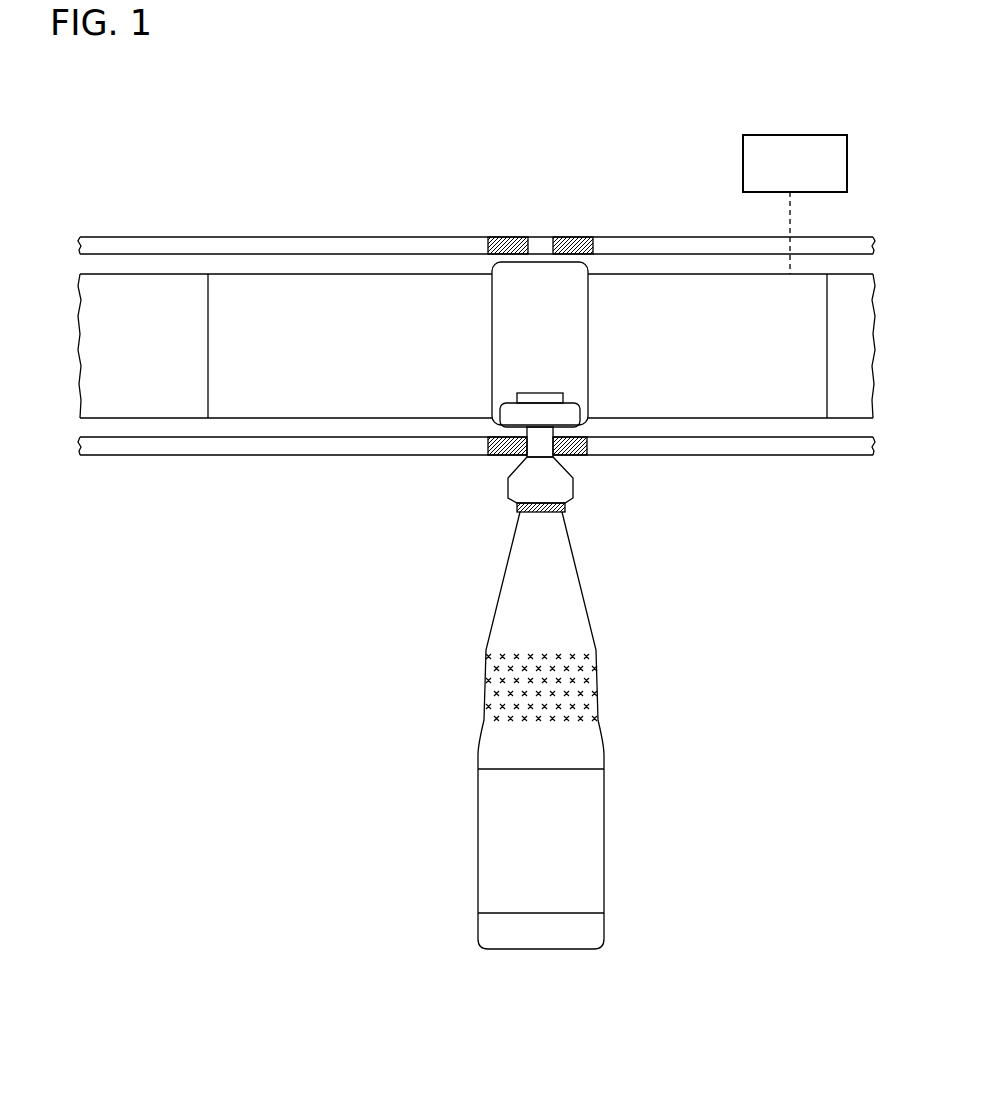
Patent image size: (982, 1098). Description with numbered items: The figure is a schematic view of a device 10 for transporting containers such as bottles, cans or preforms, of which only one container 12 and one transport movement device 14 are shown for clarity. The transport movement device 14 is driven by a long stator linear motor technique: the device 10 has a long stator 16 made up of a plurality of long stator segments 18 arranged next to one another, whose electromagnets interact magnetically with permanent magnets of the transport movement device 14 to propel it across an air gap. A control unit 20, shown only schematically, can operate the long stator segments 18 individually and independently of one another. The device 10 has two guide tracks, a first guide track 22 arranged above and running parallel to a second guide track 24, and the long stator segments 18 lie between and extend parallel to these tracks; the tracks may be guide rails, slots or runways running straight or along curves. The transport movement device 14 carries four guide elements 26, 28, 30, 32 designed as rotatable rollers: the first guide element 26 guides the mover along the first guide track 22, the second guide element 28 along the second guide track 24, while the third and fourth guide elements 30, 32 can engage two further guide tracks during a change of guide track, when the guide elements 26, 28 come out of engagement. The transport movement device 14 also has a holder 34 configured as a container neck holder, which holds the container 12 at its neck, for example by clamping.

The device for transporting containers 10 is at (481, 90).
The container 12 is at (605, 795).
The transport movement device 14 is at (590, 342).
The long stator 16 is at (262, 252).
The long stator segment 18 is at (162, 396).
The control unit 20 is at (778, 135).
The first guide track 22 is at (178, 247).
The second guide track 24 is at (280, 450).
The first guide element 26 is at (495, 236).
The second guide element 28 is at (510, 458).
The third guide element 30 is at (580, 236).
The fourth guide element 32 is at (590, 456).
The holder 34 is at (575, 490).